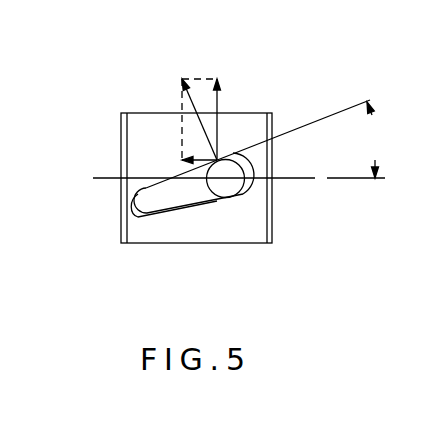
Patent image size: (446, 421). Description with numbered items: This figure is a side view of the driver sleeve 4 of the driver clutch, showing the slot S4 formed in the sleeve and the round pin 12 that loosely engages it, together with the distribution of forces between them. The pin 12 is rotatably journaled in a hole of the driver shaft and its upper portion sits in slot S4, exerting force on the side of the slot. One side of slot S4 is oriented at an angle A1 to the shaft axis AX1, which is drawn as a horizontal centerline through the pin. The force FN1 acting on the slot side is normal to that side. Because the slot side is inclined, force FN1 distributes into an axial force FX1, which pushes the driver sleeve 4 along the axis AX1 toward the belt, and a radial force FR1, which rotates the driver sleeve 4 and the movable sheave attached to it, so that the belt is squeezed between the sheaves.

The driver sleeve 4 is at (215, 244).
The round pin 12 is at (244, 185).
The slot S4 is at (158, 221).
The shaft axis AX1 is at (108, 179).
The angle A1 is at (265, 144).
The force normal to slot side FN1 is at (186, 103).
The radial force FR1 is at (219, 104).
The axial force FX1 is at (188, 156).